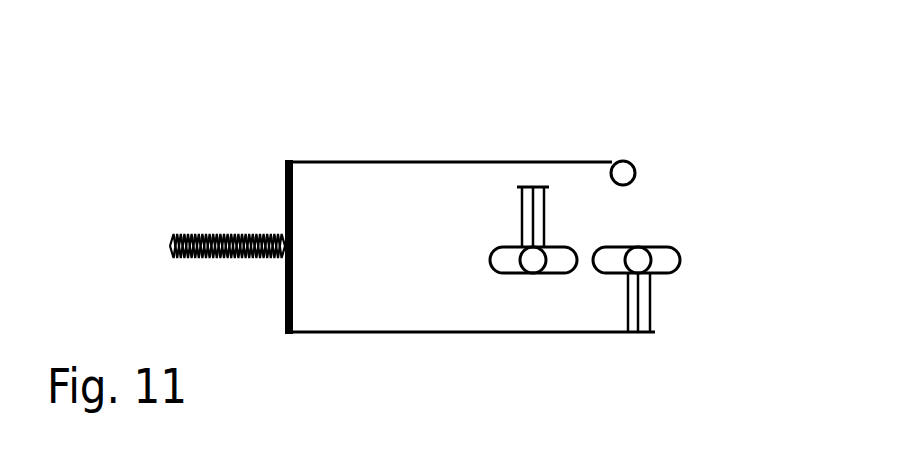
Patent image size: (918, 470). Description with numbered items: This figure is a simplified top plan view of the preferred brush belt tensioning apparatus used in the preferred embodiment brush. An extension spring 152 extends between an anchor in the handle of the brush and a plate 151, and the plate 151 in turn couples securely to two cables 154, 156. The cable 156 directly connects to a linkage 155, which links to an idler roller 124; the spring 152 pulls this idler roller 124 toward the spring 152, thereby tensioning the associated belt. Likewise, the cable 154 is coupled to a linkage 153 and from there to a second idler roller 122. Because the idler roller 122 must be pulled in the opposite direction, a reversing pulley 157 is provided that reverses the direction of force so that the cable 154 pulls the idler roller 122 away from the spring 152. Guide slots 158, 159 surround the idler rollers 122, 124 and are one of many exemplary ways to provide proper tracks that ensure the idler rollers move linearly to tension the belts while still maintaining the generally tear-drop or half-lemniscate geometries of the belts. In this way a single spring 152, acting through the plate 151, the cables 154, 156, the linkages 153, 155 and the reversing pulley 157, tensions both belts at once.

The idler roller 122 is at (533, 262).
The idler roller 124 is at (633, 254).
The plate 151 is at (285, 180).
The extension spring 152 is at (170, 243).
The linkage 153 is at (547, 217).
The cable 154 is at (395, 162).
The linkage 155 is at (650, 292).
The cable 156 is at (432, 333).
The reversing pulley 157 is at (635, 170).
The guide slot 158 is at (577, 255).
The guide slot 159 is at (680, 255).